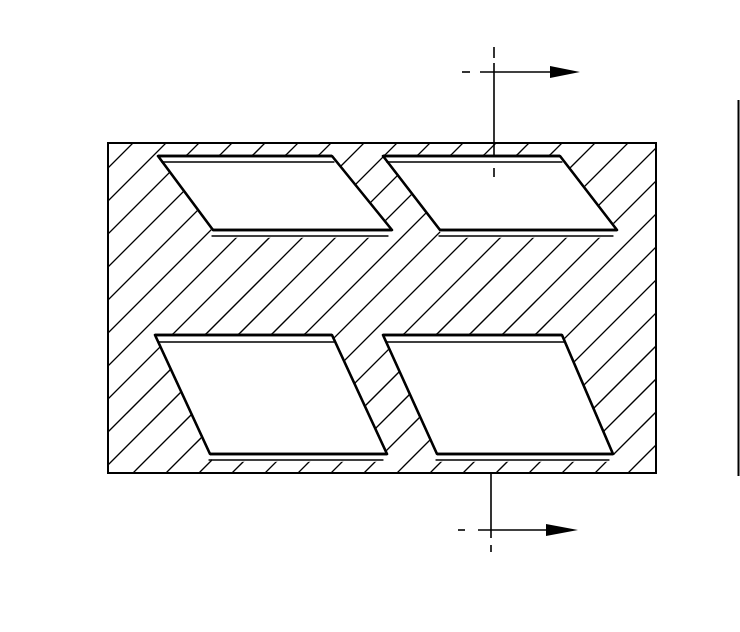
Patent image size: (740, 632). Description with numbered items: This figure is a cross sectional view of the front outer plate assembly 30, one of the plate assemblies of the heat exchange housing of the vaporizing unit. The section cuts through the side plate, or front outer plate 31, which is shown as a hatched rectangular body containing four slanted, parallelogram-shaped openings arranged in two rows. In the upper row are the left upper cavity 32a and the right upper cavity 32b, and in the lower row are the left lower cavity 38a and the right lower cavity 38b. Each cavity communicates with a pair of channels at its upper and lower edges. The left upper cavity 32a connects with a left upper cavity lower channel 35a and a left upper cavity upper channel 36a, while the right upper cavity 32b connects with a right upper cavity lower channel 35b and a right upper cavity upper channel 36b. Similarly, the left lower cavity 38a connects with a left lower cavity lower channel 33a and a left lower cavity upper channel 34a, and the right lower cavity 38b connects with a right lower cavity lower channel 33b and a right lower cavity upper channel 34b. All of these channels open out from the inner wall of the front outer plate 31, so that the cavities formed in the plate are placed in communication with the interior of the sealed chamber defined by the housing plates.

The front outer plate assembly 30 is at (306, 118).
The front outer plate 31 is at (623, 166).
The left upper cavity 32a is at (568, 203).
The right upper cavity 32b is at (196, 184).
The left lower cavity lower channel 33a is at (589, 456).
The right lower cavity lower channel 33b is at (219, 454).
The left lower cavity upper channel 34a is at (547, 341).
The right lower cavity upper channel 34b is at (181, 334).
The left upper cavity lower channel 35a is at (600, 234).
The right upper cavity lower channel 35b is at (224, 233).
The left upper cavity upper channel 36a is at (521, 156).
The right upper cavity upper channel 36b is at (187, 156).
The left lower cavity 38a is at (562, 427).
The right lower cavity 38b is at (204, 381).